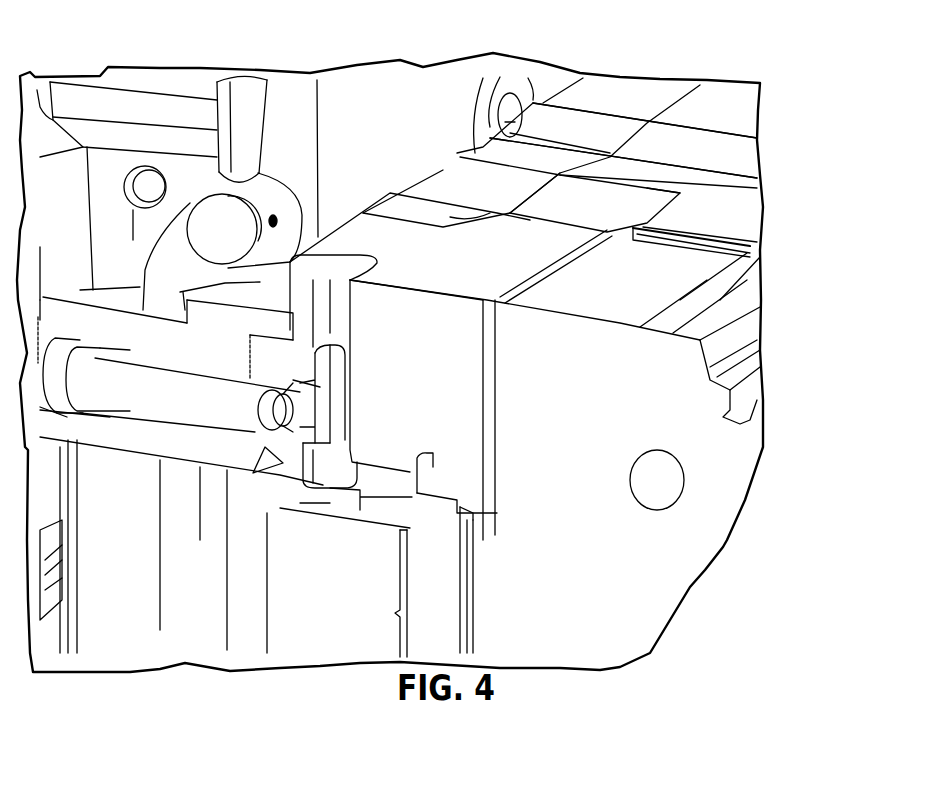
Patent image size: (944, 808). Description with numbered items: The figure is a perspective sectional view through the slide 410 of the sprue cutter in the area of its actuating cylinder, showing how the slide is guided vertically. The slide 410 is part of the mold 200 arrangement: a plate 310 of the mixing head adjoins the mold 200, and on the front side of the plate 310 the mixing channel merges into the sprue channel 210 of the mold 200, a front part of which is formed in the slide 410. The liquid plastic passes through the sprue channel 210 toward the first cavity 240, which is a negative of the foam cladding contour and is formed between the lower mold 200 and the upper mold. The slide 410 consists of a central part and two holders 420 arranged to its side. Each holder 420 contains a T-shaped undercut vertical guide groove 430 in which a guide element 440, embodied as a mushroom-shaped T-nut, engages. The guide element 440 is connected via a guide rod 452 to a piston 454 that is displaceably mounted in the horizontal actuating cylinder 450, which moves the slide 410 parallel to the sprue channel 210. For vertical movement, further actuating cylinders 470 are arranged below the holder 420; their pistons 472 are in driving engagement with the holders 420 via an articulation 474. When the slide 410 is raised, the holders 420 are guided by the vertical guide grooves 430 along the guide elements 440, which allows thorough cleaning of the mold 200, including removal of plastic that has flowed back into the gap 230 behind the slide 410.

The mold 200 is at (390, 362).
The sprue channel 210 is at (730, 167).
The gap 230 is at (533, 195).
The first cavity 240 is at (757, 327).
The plate 310 is at (387, 98).
The slide 410 is at (720, 223).
The holder 420 is at (483, 283).
The vertical guide groove 430 is at (340, 270).
The guide element 440 is at (332, 500).
The horizontal actuating cylinder 450 is at (110, 413).
The guide rod 452 is at (190, 403).
The piston 454 is at (50, 390).
The actuating cylinder 470 is at (473, 608).
The piston 472 is at (440, 563).
The articulation 474 is at (433, 460).